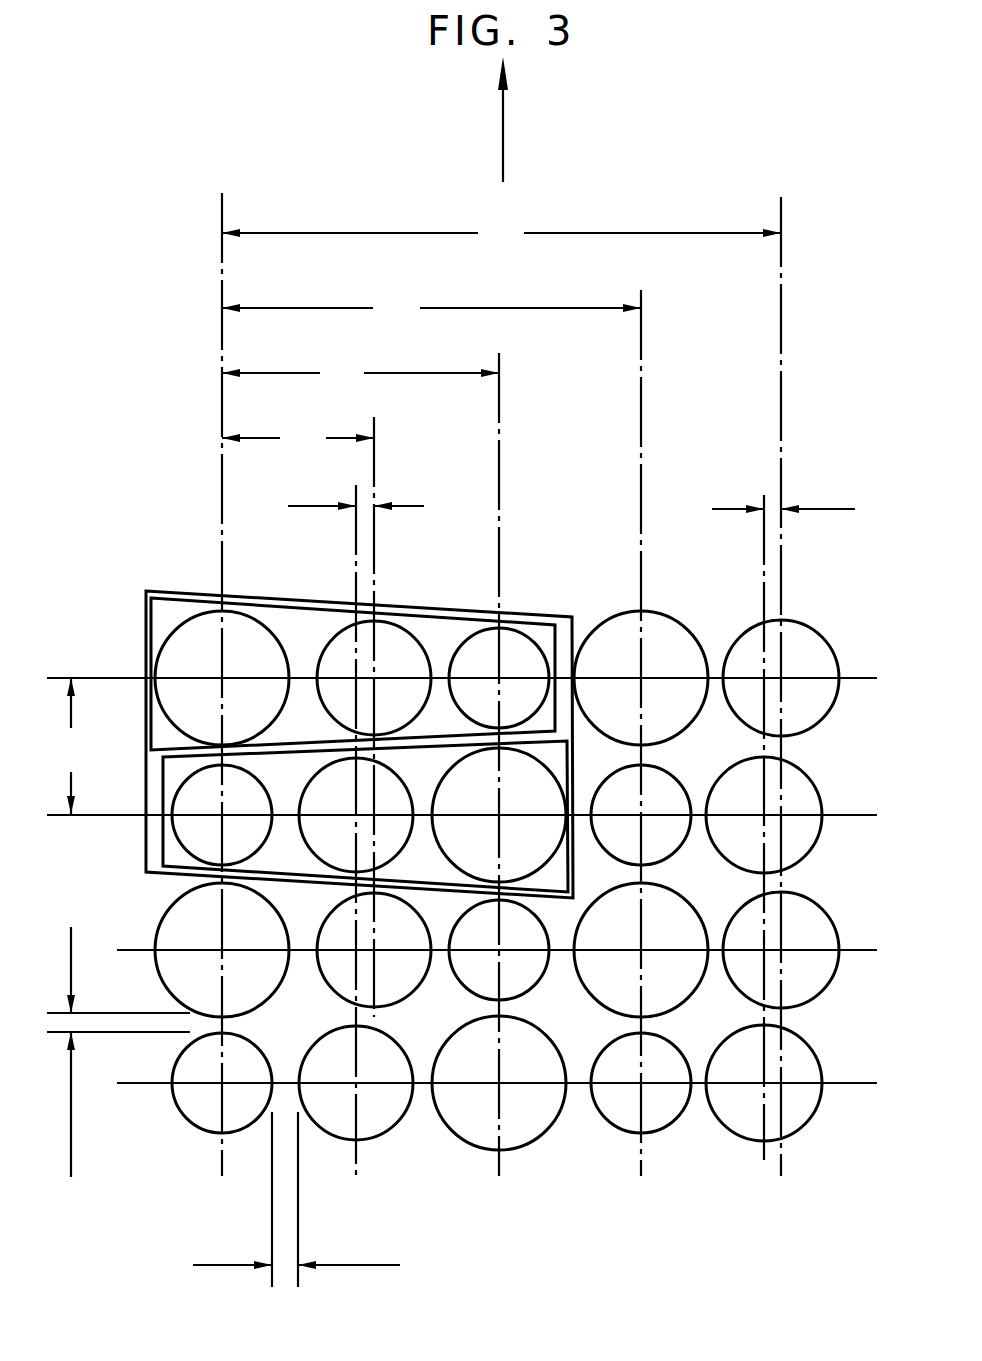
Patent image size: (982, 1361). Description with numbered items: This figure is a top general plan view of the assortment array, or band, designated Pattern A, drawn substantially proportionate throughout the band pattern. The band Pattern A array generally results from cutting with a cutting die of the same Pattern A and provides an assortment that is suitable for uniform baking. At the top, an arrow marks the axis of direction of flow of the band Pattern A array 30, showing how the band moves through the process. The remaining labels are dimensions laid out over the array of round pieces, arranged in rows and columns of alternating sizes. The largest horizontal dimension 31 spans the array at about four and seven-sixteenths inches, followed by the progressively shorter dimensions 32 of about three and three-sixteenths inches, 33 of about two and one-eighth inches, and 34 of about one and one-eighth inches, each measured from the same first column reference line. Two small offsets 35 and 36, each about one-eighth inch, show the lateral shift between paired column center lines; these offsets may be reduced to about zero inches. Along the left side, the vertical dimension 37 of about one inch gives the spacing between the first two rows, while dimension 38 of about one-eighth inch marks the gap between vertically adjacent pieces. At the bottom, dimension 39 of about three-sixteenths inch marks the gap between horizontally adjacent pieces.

The axis of direction of flow of the band Pattern A array 30 is at (506, 136).
The array dimension of about 4 7/16 inches 31 is at (501, 233).
The array dimension of about 3 3/16 inches 32 is at (431, 308).
The array dimension of about 2⅛ inches 33 is at (360, 373).
The array dimension of about 1⅛ inches 34 is at (298, 438).
The array dimension of about ⅛ inch 35 is at (375, 506).
The array dimension of about ⅛ inch 36 is at (764, 509).
The array dimension of about 1 inch 37 is at (74, 746).
The array dimension of about ⅛ inch 38 is at (71, 1177).
The array dimension of about 3/16 inch 39 is at (315, 1199).